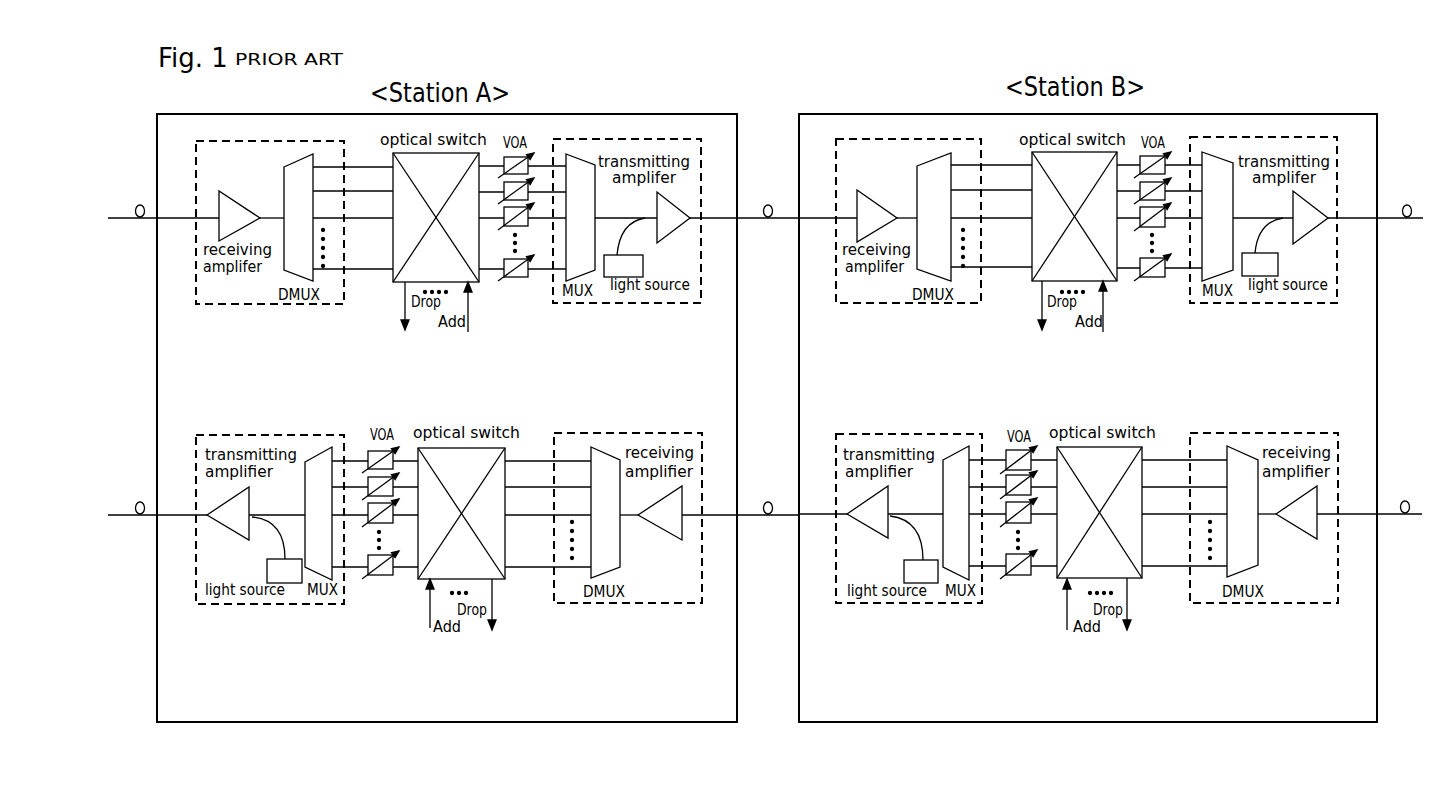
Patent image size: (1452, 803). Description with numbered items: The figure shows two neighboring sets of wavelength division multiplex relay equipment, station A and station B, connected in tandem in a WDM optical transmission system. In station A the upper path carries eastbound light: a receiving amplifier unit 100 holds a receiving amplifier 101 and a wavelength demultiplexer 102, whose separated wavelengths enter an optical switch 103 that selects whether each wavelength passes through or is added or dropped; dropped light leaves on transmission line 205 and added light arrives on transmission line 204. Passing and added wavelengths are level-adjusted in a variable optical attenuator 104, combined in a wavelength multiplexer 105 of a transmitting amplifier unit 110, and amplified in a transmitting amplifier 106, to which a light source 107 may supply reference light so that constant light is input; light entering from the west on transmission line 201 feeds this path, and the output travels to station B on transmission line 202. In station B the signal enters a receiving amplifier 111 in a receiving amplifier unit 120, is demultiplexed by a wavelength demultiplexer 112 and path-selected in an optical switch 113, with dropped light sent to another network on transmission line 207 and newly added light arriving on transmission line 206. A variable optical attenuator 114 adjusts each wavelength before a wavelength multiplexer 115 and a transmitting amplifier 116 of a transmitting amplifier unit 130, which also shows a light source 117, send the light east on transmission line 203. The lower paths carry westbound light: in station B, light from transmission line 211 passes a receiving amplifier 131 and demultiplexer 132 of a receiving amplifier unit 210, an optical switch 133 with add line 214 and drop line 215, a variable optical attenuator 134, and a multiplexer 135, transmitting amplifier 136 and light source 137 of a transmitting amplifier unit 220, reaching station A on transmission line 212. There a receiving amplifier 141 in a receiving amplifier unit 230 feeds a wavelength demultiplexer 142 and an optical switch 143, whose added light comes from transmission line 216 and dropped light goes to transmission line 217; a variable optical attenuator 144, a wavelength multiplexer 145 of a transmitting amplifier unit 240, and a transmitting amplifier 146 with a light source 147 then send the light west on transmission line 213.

The receiving amplifier unit 100 is at (268, 244).
The receiving amplifier 101 is at (239, 216).
The demultiplexer (DMUX) 102 is at (299, 217).
The optical switch 103 is at (436, 217).
The variable optical attenuator 104 is at (516, 230).
The multiplexer (MUX) 105 is at (580, 217).
The transmitting amplifier 106 is at (673, 217).
The light source 107 is at (624, 247).
The transmitting amplifier unit 110 is at (633, 240).
The receiving amplifier 111 is at (877, 216).
The wavelength demultiplexer 112 is at (934, 217).
The optical switch 113 is at (1074, 216).
The variable optical attenuator 114 is at (1152, 226).
The wavelength multiplexer 115 is at (1217, 216).
The transmitting amplifier 116 is at (1310, 217).
The light source 117 is at (1262, 247).
The receiving amplifier unit 120 is at (907, 243).
The transmitting amplifier unit 130 is at (1270, 242).
The receiving amplifier 131 is at (1296, 512).
The demultiplexer (DMUX) 132 is at (1242, 511).
The optical switch 133 is at (1099, 512).
The variable optical attenuator (VOA) 134 is at (1018, 523).
The multiplexer (MUX) 135 is at (957, 513).
The transmitting amplifier 136 is at (867, 512).
The light source 137 is at (914, 549).
The receiving amplifier 141 is at (660, 513).
The wavelength demultiplexer 142 is at (606, 512).
The optical switch 143 is at (461, 513).
The variable optical attenuator 144 is at (380, 525).
The wavelength multiplexer 145 is at (319, 513).
The transmitting amplifier 146 is at (228, 513).
The light source 147 is at (277, 550).
The optical transmission line (input to station A) 201 is at (132, 223).
The transmission line 202 is at (768, 223).
The transmission line 203 is at (1400, 223).
The transmission line 204 is at (484, 307).
The transmission line 205 is at (394, 306).
The transmission line 206 is at (1118, 306).
The transmission line 207 is at (1030, 305).
The receiving amplifier unit 210 is at (1265, 540).
The optical transmission line (input to station B) 211 is at (1399, 521).
The transmission line 212 is at (768, 519).
The transmission line 213 is at (132, 519).
The add port 214 is at (1054, 607).
The drop port 215 is at (1142, 604).
The transmission line 216 is at (418, 607).
The drop port 217 is at (507, 604).
The transmitting amplifier unit 220 is at (909, 540).
The receiving amplifier unit 230 is at (628, 540).
The transmitting amplifier unit 240 is at (271, 541).